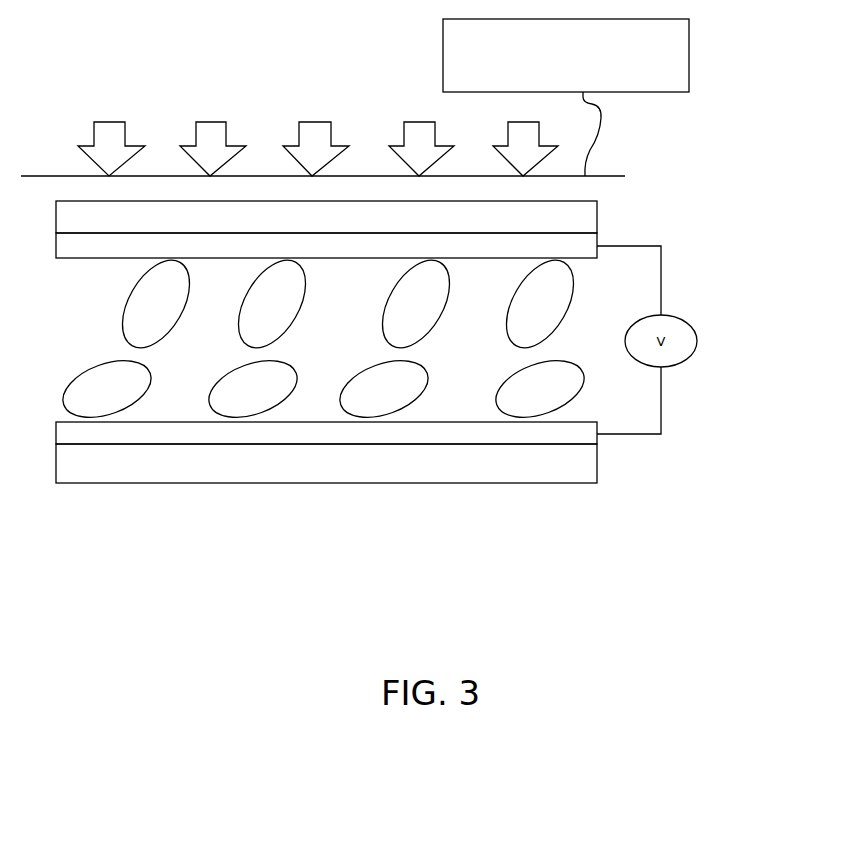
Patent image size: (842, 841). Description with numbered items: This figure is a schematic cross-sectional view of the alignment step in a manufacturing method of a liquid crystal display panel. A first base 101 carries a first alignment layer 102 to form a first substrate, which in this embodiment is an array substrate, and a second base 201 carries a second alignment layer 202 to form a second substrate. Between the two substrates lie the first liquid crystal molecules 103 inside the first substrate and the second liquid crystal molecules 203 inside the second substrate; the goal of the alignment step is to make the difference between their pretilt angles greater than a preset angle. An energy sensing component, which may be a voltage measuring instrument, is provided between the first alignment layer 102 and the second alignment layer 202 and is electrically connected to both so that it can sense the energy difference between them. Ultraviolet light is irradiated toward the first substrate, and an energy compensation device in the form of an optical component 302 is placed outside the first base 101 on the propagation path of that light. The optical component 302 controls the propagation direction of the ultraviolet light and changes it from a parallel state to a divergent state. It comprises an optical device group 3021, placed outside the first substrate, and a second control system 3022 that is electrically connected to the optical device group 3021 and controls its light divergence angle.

The first base 101 is at (570, 218).
The first alignment layer 102 is at (573, 248).
The first liquid crystal molecules 103 is at (548, 302).
The second base 201 is at (580, 468).
The second alignment layer 202 is at (585, 433).
The second liquid crystal molecules 203 is at (558, 394).
The optical component 302 is at (409, 312).
The optical device group 3021 is at (612, 176).
The second control system 3022 is at (642, 66).